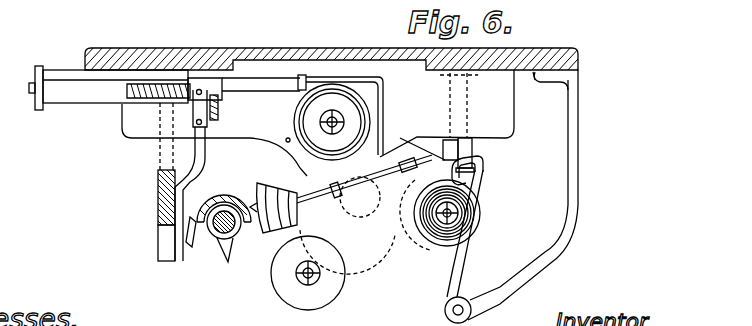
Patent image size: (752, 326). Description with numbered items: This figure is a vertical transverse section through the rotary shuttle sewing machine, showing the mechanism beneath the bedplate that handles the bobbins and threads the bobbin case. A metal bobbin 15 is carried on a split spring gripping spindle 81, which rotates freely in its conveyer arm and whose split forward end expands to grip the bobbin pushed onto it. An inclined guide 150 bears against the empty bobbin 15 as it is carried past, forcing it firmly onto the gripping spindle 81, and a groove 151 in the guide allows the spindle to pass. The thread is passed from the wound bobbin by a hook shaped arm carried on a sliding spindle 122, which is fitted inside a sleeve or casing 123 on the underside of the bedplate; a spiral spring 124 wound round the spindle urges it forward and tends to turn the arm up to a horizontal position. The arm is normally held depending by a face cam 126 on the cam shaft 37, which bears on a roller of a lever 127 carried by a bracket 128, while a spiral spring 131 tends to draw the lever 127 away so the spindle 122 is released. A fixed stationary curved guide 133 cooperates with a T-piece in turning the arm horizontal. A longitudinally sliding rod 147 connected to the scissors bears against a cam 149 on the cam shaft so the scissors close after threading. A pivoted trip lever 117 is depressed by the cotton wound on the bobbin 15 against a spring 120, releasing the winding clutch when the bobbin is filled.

The bobbin 15 is at (443, 243).
The cam shaft 37 is at (227, 205).
The split spring gripping spindle 81 is at (337, 117).
The trip lever 117 is at (484, 177).
The spring 120 is at (470, 150).
The sliding spindle 122 is at (257, 83).
The sleeve or casing 123 is at (109, 88).
The spiral spring 124 is at (385, 88).
The face cam 126 is at (195, 246).
The lever 127 is at (182, 238).
The bracket 128 is at (153, 210).
The spiral spring 131 is at (410, 172).
The fixed stationary curved guide 133 is at (218, 110).
The longitudinally sliding rod 147 is at (358, 180).
The cam 149 is at (226, 245).
The inclined guide 150 is at (267, 172).
The groove 151 is at (262, 222).